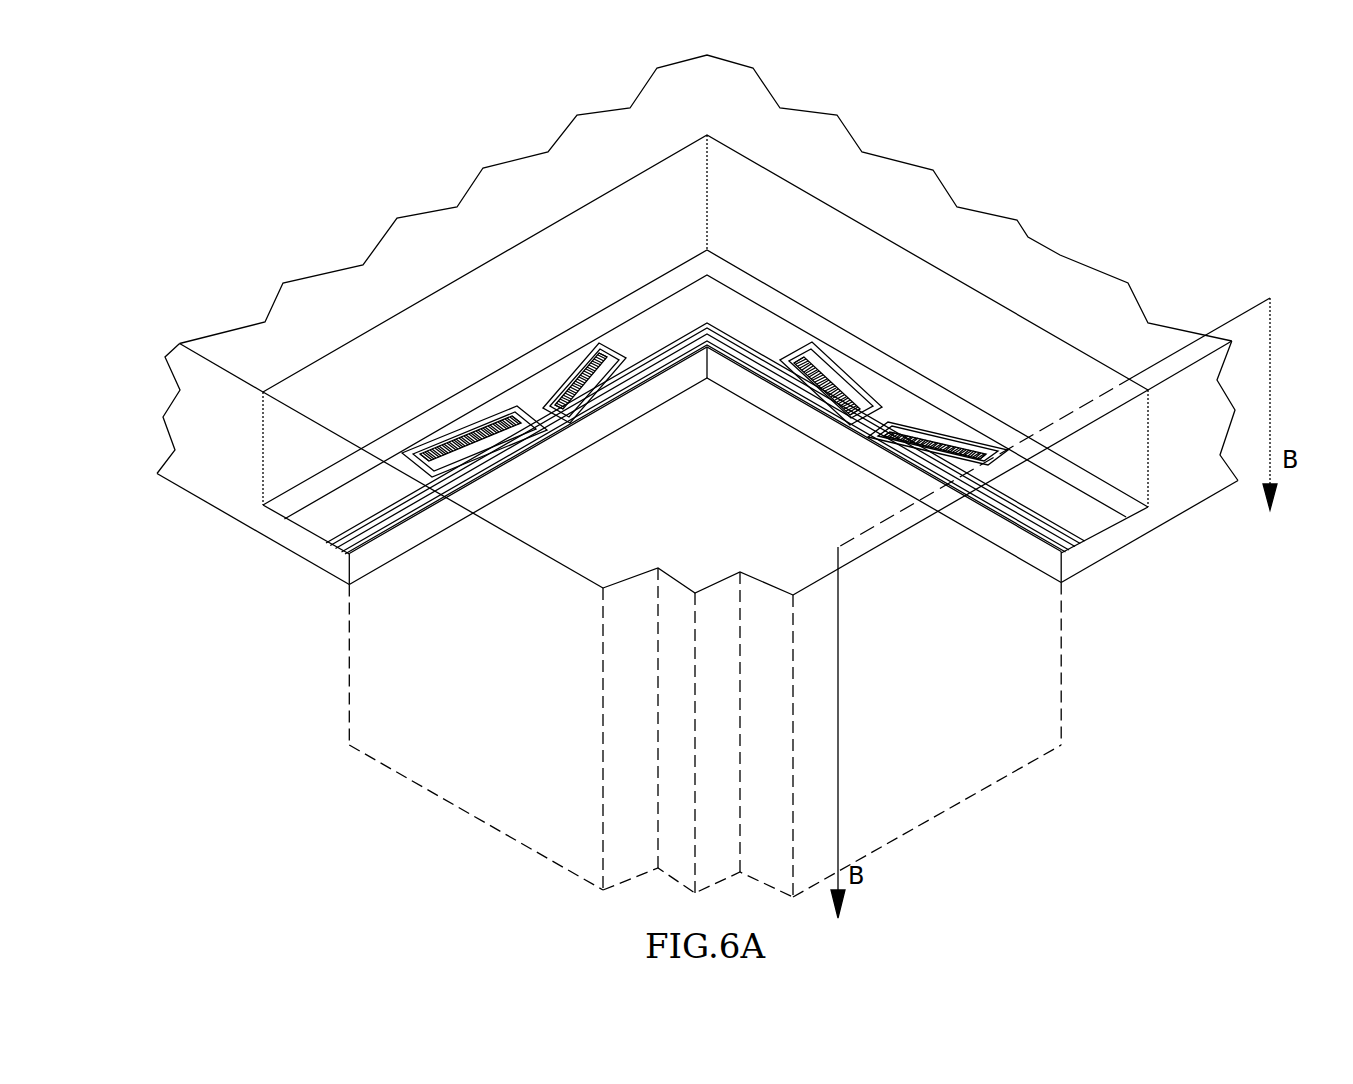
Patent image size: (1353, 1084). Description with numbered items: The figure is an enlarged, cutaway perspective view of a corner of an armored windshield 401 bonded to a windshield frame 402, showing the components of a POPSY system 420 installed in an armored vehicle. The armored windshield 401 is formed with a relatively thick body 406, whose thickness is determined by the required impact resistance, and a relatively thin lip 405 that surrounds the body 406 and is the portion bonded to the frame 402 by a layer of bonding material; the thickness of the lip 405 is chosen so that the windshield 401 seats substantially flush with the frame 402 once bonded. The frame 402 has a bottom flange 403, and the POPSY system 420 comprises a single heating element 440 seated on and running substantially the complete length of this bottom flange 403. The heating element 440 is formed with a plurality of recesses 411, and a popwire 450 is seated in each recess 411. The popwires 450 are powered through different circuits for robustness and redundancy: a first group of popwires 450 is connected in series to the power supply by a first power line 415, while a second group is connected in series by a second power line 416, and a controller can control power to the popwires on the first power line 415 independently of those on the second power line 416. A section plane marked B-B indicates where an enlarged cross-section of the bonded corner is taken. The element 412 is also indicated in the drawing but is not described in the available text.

The armored windshield 401 is at (716, 498).
The windshield frame 402 is at (133, 390).
The bottom flange 403 is at (286, 500).
The lip 405 is at (286, 448).
The body 406 is at (990, 683).
The recesses 411 is at (415, 453).
The conductive pad 412 is at (538, 418).
The first power line 415 is at (418, 457).
The second power line 416 is at (885, 415).
The POPSY system 420 is at (1192, 158).
The heating element 440 is at (357, 510).
The popwire 450 is at (558, 346).